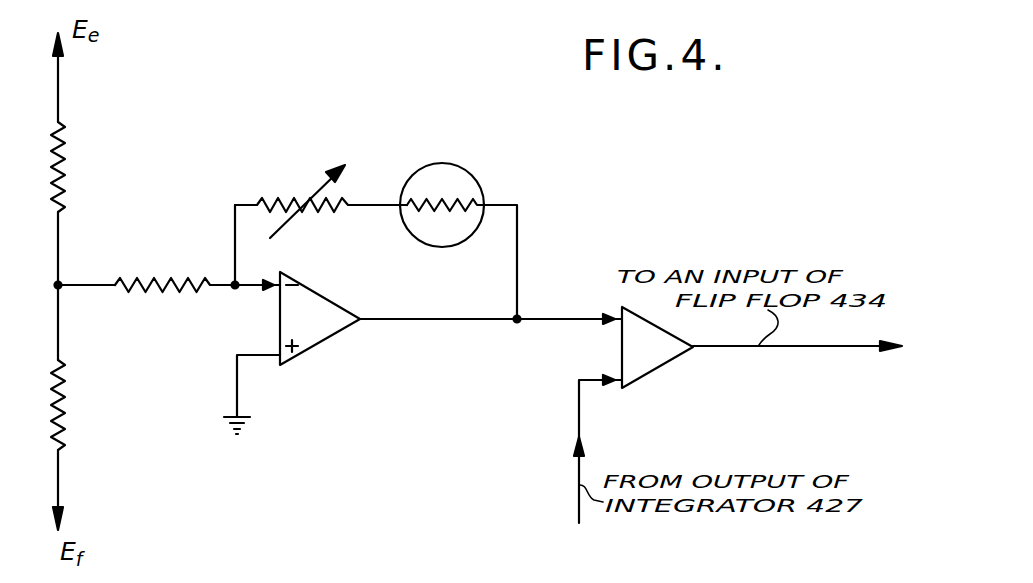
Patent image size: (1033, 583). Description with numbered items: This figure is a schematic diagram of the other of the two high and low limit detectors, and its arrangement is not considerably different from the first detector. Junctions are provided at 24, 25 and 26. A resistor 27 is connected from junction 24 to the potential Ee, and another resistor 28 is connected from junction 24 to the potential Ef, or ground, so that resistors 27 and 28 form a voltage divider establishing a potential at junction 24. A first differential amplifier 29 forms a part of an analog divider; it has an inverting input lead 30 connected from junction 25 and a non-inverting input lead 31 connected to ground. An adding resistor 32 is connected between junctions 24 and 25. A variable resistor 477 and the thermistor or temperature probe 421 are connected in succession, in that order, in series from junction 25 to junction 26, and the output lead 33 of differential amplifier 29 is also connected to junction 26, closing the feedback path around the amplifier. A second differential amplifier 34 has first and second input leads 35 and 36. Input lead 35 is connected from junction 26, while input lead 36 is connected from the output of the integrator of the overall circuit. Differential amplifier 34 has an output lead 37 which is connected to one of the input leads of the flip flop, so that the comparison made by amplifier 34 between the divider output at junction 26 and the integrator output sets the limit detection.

The junction 24 is at (56, 285).
The junction 25 is at (235, 288).
The junction 26 is at (517, 322).
The resistor 27 is at (62, 157).
The resistor 28 is at (65, 413).
The first differential amplifier 29 is at (352, 296).
The inverting input lead 30 is at (247, 283).
The non-inverting input lead 31 is at (250, 354).
The adding resistor 32 is at (166, 254).
The output lead 33 is at (401, 320).
The second differential amplifier 34 is at (651, 379).
The first input lead 35 is at (571, 290).
The second input lead 36 is at (579, 404).
The output lead 37 is at (727, 346).
The thermistor or temperature probe 421 is at (492, 148).
The variable resistor 477 is at (278, 200).